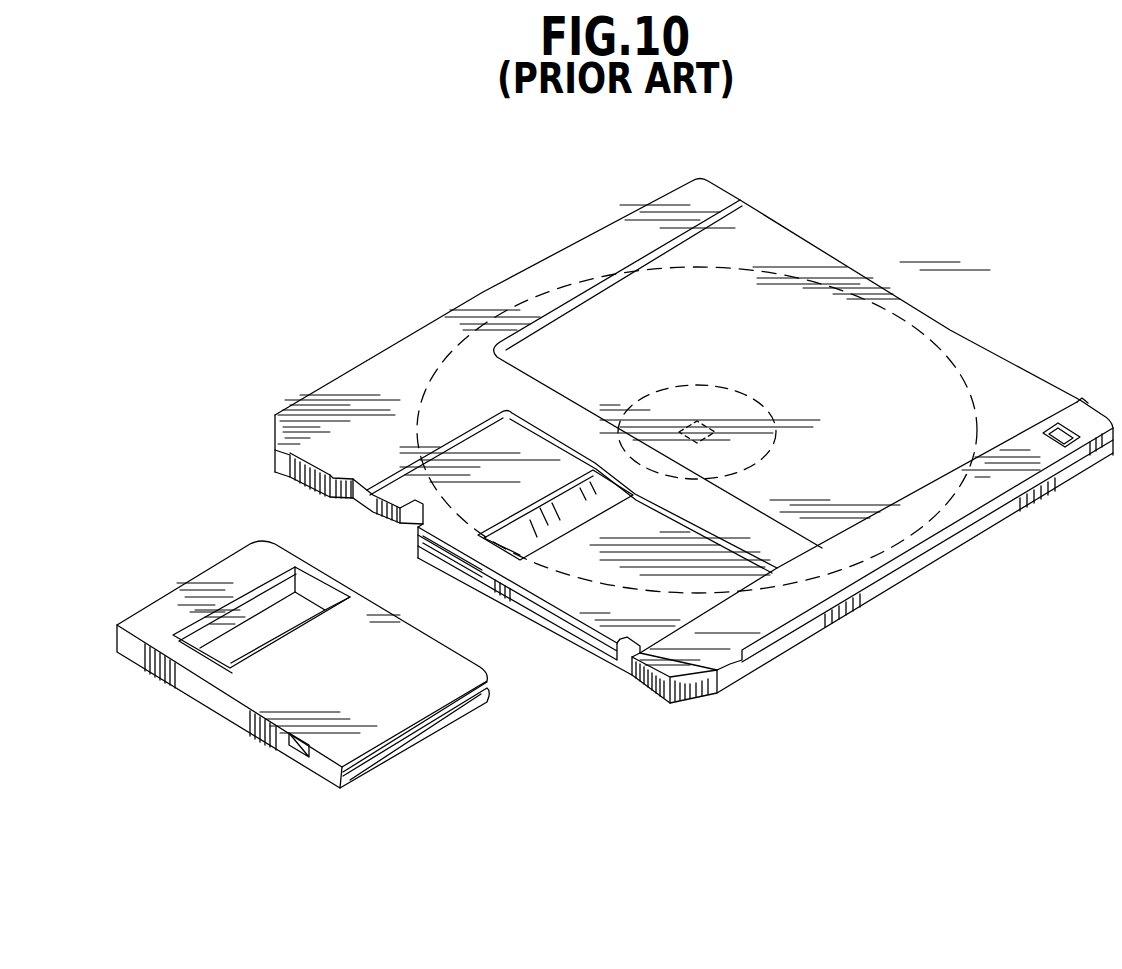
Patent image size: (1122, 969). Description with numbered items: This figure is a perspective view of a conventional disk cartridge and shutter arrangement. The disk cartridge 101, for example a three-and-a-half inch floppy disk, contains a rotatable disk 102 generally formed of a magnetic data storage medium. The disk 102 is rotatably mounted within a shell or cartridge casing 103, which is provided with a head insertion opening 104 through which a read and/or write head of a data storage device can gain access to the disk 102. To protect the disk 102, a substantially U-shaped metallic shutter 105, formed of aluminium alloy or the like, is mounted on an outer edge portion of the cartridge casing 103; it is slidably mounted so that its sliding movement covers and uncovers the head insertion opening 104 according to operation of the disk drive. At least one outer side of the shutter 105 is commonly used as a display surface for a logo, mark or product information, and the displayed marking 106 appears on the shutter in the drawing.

The disk cartridge 101 is at (903, 296).
The disk 102 is at (581, 283).
The cartridge casing 103 is at (484, 293).
The head insertion opening 104 is at (540, 503).
The shutter 105 is at (217, 568).
The printed indicia 106 is at (388, 653).